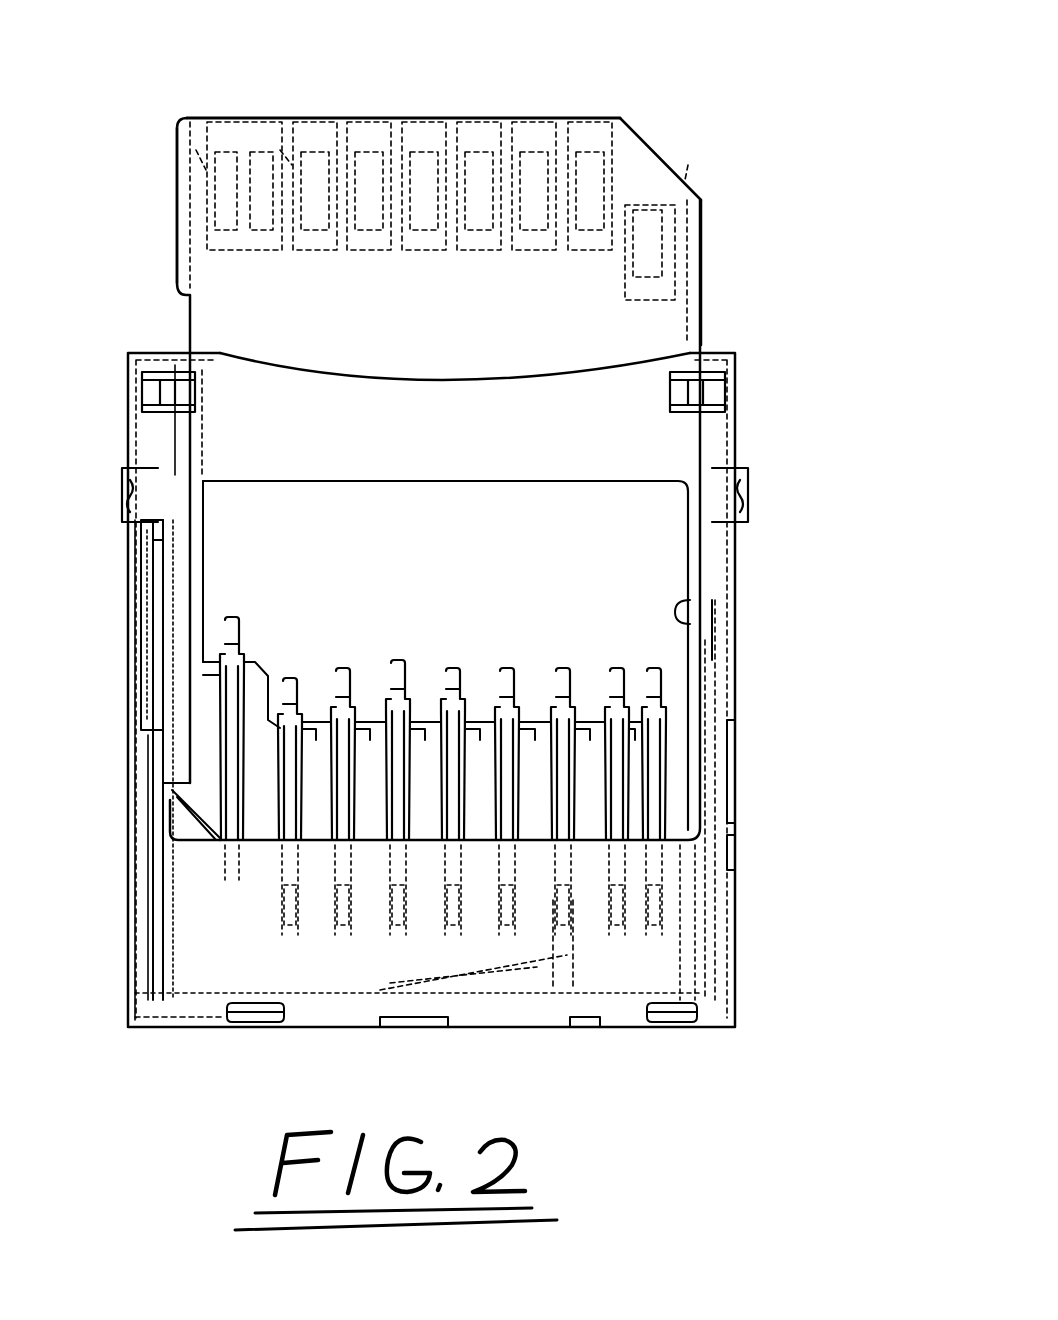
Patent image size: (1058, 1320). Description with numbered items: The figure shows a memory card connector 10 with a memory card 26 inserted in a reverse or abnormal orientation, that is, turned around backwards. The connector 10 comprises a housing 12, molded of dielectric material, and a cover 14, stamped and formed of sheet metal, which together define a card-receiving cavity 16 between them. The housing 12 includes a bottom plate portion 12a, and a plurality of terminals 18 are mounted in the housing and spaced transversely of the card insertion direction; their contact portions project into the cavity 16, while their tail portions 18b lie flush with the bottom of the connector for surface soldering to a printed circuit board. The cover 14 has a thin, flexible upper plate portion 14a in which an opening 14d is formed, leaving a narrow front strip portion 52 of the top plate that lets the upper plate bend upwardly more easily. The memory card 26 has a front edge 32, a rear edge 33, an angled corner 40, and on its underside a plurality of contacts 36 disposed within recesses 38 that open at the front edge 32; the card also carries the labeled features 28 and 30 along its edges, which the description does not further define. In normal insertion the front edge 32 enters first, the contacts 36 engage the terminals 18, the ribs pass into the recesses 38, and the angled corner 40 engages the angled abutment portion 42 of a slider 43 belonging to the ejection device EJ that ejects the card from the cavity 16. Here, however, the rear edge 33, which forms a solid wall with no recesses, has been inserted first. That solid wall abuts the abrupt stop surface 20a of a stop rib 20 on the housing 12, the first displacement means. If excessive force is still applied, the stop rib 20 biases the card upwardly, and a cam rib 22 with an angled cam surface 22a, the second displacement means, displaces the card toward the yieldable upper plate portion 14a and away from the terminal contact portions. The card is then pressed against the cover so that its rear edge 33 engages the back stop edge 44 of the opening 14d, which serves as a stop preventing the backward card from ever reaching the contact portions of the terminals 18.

The memory card connector 10 is at (758, 578).
The housing 12 is at (738, 438).
The bottom plate portion 12a is at (532, 750).
The cover 14 is at (665, 420).
The upper plate portion 14a is at (438, 952).
The opening 14d is at (695, 616).
The card-receiving cavity 16 is at (463, 382).
The terminals 18 is at (440, 740).
The tail portions 18b is at (445, 745).
The stop rib 20 is at (238, 1030).
The stop surface 20a is at (245, 825).
The cam rib 22 is at (740, 905).
The angled cam surface 22a is at (738, 845).
The memory card 26 is at (293, 118).
The card corner notch 28 is at (180, 138).
The card side edges 30 is at (178, 262).
The front edge 32 is at (482, 118).
The rear edge 33 is at (538, 845).
The contacts 36 is at (437, 160).
The recesses 38 is at (285, 150).
The angled corner 40 is at (655, 152).
The angled abutment portion 42 is at (185, 823).
The slider 43 is at (133, 700).
The back stop edge 44 is at (362, 845).
The front strip portion 52 is at (380, 395).
The ejection device EJ is at (130, 680).